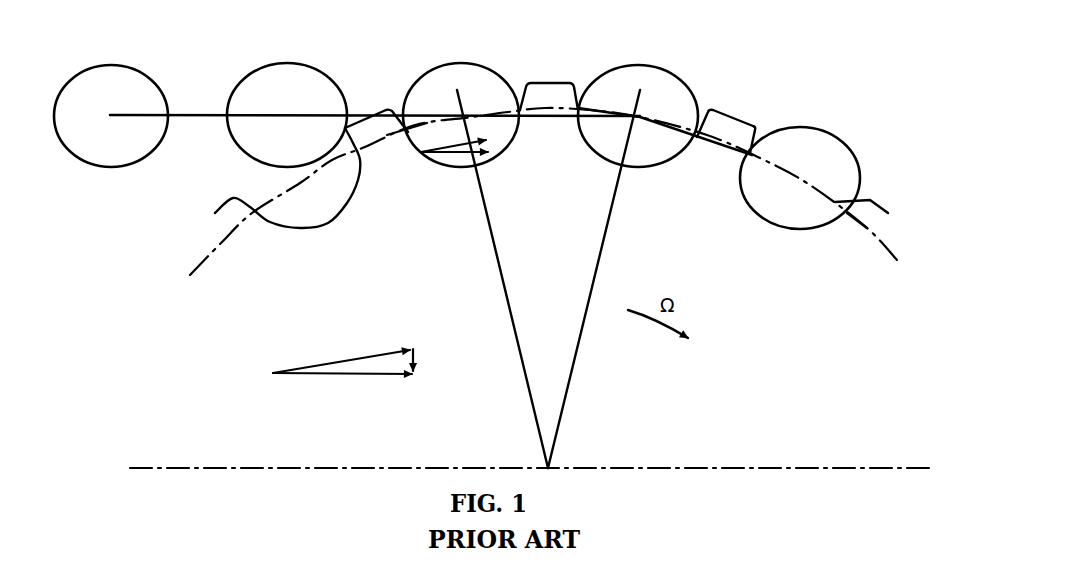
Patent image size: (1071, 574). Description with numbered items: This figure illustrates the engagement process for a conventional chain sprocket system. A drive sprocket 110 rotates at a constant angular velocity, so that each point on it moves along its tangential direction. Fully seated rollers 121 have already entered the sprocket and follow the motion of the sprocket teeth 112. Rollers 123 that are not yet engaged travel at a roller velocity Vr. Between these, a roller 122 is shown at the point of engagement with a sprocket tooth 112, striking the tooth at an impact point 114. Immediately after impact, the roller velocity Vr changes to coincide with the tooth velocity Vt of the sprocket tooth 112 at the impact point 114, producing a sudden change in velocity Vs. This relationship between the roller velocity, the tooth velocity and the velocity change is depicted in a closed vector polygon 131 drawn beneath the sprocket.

The drive sprocket 110 is at (716, 266).
The sprocket tooth 112 is at (350, 162).
The impact point 114 is at (423, 154).
The fully seated roller 121 is at (647, 82).
The roller at point of engagement 122 is at (455, 77).
The not yet engaged roller 123 is at (110, 80).
The closed vector polygon 131 is at (338, 352).